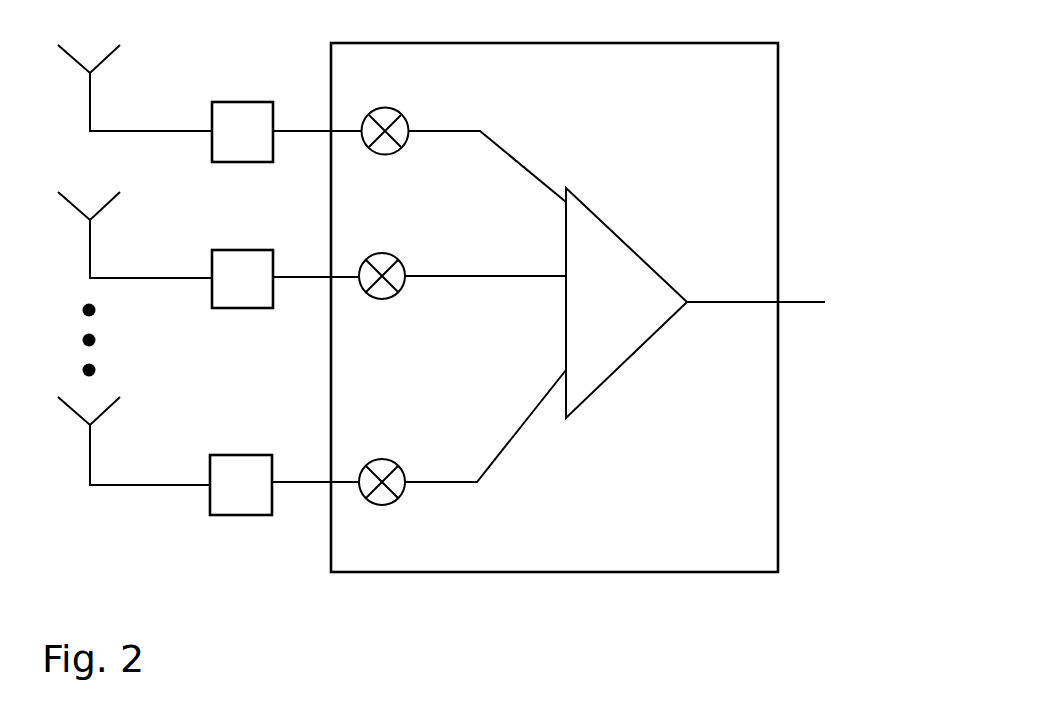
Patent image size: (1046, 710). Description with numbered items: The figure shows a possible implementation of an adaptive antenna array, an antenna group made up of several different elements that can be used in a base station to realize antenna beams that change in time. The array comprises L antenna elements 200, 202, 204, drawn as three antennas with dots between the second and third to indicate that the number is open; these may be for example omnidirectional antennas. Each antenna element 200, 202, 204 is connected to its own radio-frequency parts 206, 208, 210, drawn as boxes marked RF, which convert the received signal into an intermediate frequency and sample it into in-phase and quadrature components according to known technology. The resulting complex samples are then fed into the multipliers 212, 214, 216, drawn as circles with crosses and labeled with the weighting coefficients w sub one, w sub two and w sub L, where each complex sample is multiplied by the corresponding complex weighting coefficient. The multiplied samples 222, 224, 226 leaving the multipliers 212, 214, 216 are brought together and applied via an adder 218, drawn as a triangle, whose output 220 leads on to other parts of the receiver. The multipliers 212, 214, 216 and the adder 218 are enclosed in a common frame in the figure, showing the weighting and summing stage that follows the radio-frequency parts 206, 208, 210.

The antenna element 200 is at (88, 97).
The antenna element 202 is at (88, 250).
The antenna element 204 is at (86, 455).
The radio-frequency parts 206 is at (242, 102).
The radio-frequency parts 208 is at (242, 250).
The radio-frequency parts 210 is at (241, 455).
The multiplier 212 is at (383, 155).
The multiplier 214 is at (382, 302).
The multiplier 216 is at (382, 507).
The adder 218 is at (603, 220).
The output 220 is at (760, 303).
The multiplied sample 222 is at (507, 152).
The multiplied sample 224 is at (460, 273).
The multiplied sample 226 is at (507, 443).